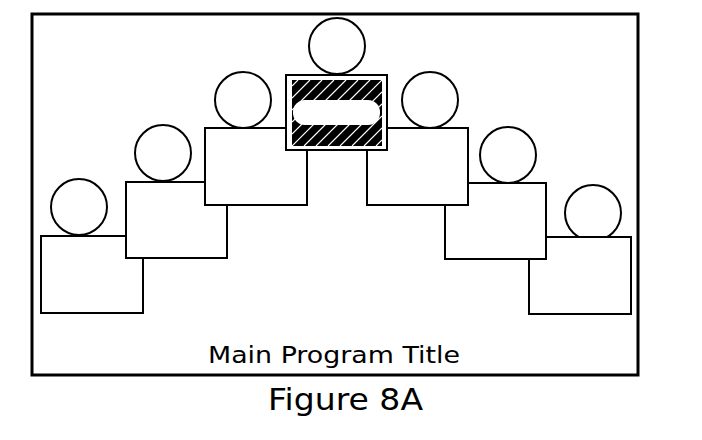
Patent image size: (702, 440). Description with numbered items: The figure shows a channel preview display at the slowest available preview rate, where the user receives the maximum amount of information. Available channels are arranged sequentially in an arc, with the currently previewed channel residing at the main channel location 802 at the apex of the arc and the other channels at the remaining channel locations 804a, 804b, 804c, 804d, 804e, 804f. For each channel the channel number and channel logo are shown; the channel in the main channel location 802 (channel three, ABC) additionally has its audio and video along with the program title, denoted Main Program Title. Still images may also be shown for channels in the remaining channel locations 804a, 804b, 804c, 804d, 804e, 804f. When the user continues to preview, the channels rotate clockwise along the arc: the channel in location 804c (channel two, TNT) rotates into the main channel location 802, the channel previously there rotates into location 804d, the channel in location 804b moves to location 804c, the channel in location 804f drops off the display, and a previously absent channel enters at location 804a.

The main channel location 802 is at (367, 75).
The remaining channel location 804a is at (107, 313).
The remaining channel location 804b is at (182, 258).
The remaining channel location 804c is at (258, 205).
The remaining channel location 804d is at (430, 205).
The remaining channel location 804e is at (465, 259).
The remaining channel location 804f is at (550, 315).